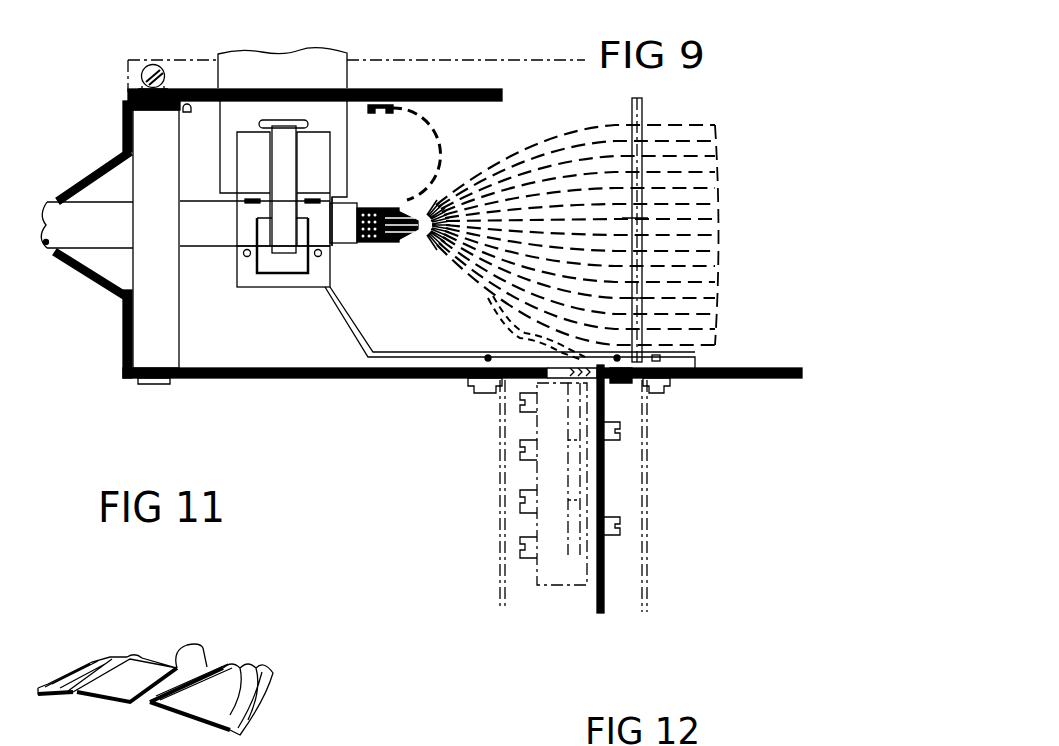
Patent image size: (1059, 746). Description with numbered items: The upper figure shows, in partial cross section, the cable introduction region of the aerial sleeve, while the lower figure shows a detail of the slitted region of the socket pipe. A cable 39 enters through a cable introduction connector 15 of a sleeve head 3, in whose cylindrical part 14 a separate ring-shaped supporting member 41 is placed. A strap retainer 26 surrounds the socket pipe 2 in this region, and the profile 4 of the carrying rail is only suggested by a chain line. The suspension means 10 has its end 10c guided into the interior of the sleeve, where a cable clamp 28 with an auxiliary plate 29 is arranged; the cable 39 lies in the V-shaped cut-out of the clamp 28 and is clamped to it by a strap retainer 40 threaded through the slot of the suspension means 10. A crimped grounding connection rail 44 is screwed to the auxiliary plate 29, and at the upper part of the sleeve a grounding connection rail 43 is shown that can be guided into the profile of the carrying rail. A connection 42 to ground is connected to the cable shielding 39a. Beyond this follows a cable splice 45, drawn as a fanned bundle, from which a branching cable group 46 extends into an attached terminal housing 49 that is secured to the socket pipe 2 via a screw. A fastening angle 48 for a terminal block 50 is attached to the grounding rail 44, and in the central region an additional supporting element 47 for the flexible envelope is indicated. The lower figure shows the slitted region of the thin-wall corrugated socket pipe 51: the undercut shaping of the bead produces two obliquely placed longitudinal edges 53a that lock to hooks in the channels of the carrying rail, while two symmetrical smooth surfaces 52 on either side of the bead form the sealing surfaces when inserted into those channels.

In FIG. 9, the socket pipe 2 is at (728, 378).
In FIG. 9, the sleeve head 3 is at (120, 138).
In FIG. 9, the profile 4 is at (128, 80).
In FIG. 9, the suspension means 10 is at (348, 135).
In FIG. 9, the end of suspension means 10c is at (340, 177).
In FIG. 9, the cylindrical part 14 is at (190, 104).
In FIG. 9, the cable introduction connector 15 is at (100, 170).
In FIG. 9, the strap retainer 26 is at (153, 64).
In FIG. 9, the cable clamp 28 is at (233, 180).
In FIG. 9, the auxiliary plate 29 is at (233, 234).
In FIG. 9, the cable 39 is at (60, 222).
In FIG. 9, the cable shielding 39a is at (367, 244).
In FIG. 9, the strap retainer 40 is at (317, 150).
In FIG. 9, the ring-shaped supporting member 41 is at (165, 147).
In FIG. 9, the connection to ground 42 is at (440, 120).
In FIG. 9, the grounding connection rail 43 is at (470, 102).
In FIG. 9, the grounding connection rail 44 is at (345, 318).
In FIG. 9, the cable splice 45 is at (695, 232).
In FIG. 9, the branching cable group 46 is at (500, 336).
In FIG. 9, the additional supporting element 47 is at (642, 106).
In FIG. 9, the fastening angle 48 is at (600, 450).
In FIG. 9, the terminal housing 49 is at (646, 505).
In FIG. 9, the terminal block 50 is at (547, 440).
In FIG. 11, the socket pipe 51 is at (96, 655).
In FIG. 11, the smooth surfaces 52 is at (153, 663).
In FIG. 11, the longitudinal edges 53a is at (185, 663).